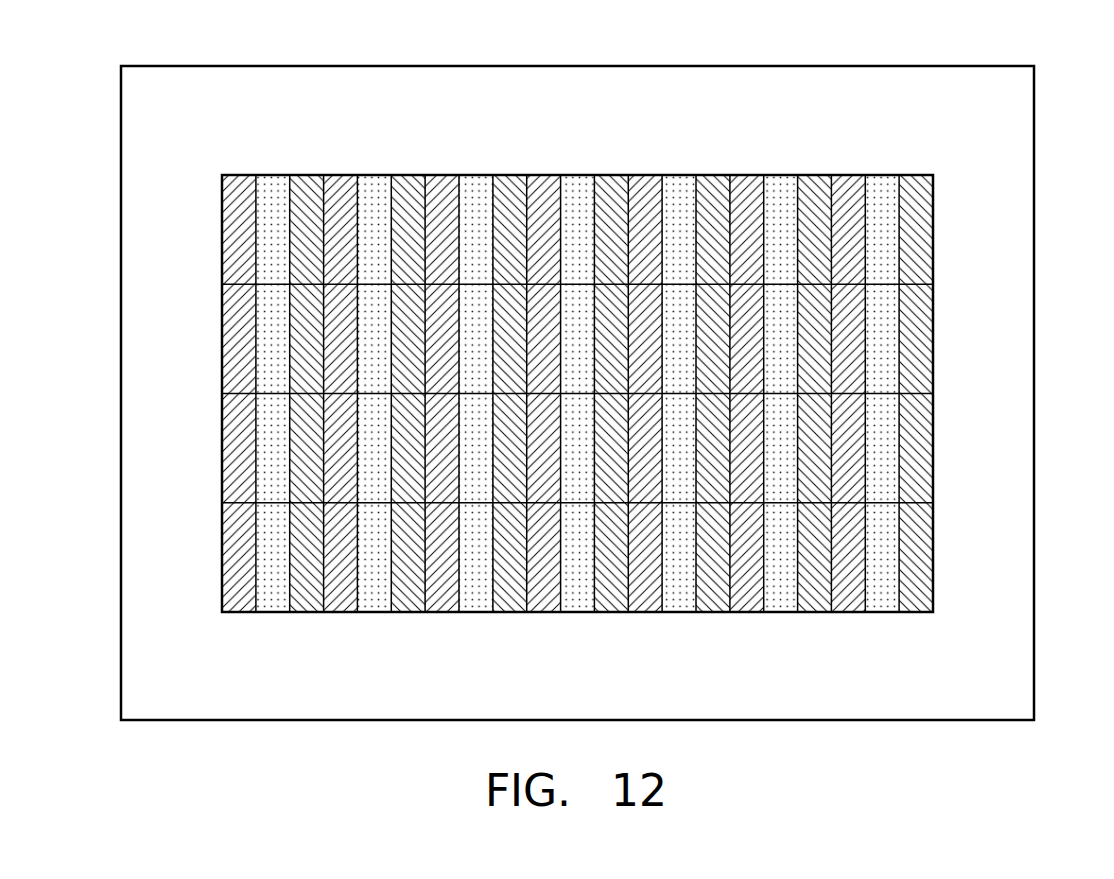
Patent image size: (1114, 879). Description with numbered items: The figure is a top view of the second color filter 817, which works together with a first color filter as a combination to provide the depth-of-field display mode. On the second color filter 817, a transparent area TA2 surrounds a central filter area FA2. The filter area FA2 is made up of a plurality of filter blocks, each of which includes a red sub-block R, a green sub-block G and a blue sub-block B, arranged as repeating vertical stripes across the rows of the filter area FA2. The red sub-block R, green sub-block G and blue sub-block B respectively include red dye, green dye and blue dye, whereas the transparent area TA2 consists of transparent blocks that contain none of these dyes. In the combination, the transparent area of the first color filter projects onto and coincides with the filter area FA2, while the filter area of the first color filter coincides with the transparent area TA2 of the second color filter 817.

The filter area FA2 is at (577, 315).
The transparent area TA2 is at (873, 48).
The red sub-block R is at (543, 393).
The green sub-block G is at (577, 393).
The blue sub-block B is at (611, 393).
The second color filter 817 is at (1113, 769).